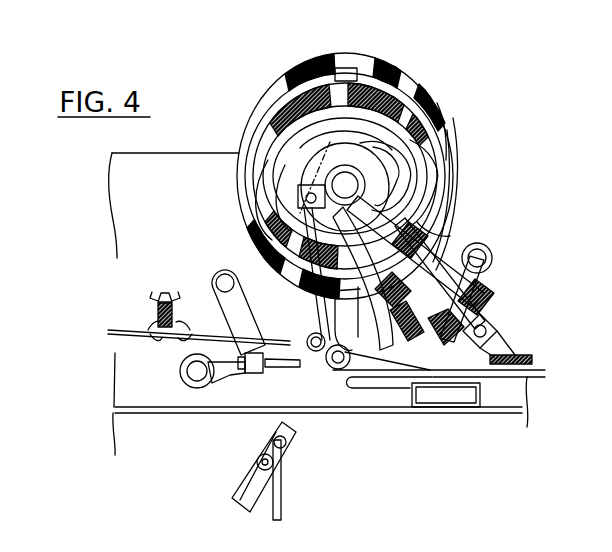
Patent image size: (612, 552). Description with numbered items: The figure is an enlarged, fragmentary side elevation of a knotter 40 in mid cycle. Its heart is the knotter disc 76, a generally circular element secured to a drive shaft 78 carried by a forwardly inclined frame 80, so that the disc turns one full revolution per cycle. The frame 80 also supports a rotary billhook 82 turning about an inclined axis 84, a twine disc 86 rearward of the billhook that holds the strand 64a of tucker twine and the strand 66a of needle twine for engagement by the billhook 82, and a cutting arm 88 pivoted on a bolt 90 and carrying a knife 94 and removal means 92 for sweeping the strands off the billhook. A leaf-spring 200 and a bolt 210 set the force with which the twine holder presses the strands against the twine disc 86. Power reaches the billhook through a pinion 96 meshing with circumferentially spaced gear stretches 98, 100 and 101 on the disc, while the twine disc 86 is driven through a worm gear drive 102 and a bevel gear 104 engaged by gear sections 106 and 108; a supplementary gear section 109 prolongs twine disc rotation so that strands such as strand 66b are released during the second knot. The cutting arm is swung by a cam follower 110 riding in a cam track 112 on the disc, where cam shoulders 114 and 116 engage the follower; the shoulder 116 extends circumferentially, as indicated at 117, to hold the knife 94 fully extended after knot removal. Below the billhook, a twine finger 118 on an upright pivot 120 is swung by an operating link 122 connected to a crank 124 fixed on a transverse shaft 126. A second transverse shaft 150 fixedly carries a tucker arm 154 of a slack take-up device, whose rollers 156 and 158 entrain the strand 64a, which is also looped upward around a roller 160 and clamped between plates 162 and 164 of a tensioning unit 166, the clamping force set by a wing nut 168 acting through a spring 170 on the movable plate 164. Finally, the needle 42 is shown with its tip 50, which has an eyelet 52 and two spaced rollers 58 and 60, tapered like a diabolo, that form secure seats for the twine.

The knotter 40 is at (471, 172).
The needle 42 is at (236, 512).
The tip 50 is at (299, 433).
The eyelet 52 is at (215, 455).
The roller 58 is at (284, 455).
The roller 60 is at (274, 437).
The strand of tucker twine 64a is at (521, 379).
The strand of needle twine 66a is at (281, 497).
The strand 66b is at (238, 474).
The knotter disc 76 is at (425, 92).
The drive shaft 78 is at (352, 165).
The frame 80 is at (433, 262).
The billhook 82 is at (392, 385).
The inclined axis 84 is at (374, 250).
The twine disc 86 is at (493, 338).
The cutting arm 88 is at (354, 337).
The bolt 90 is at (312, 327).
The removal means 92 is at (404, 388).
The knife 94 is at (436, 322).
The pinion 96 is at (404, 276).
The gear stretch 98 is at (237, 238).
The gear stretch 100 is at (313, 53).
The gear stretch 101 is at (440, 100).
The worm gear drive 102 is at (490, 290).
The bevel gear 104 is at (417, 222).
The gear section 106 is at (268, 200).
The gear section 108 is at (282, 108).
The supplementary gear section 109 is at (378, 77).
The cam follower 110 is at (358, 216).
The cam track 112 is at (282, 163).
The cam shoulder 114 is at (257, 150).
The cam shoulder 116 is at (442, 122).
The extended part of cam shoulder 117 is at (417, 174).
The twine finger 118 is at (370, 378).
The upright pivot 120 is at (448, 386).
The operating link 122 is at (270, 377).
The crank 124 is at (247, 332).
The shaft 126 is at (213, 277).
The transverse shaft 150 is at (181, 376).
The tucker arm 154 is at (212, 391).
The roller 156 is at (335, 369).
The roller 158 is at (308, 338).
The roller 160 is at (329, 150).
The plate 162 is at (157, 340).
The movable plate 164 is at (152, 323).
The tensioning unit 166 is at (150, 293).
The wing nut 168 is at (163, 292).
The spring 170 is at (173, 321).
The leaf-spring 200 is at (492, 272).
The bolt 210 is at (487, 250).